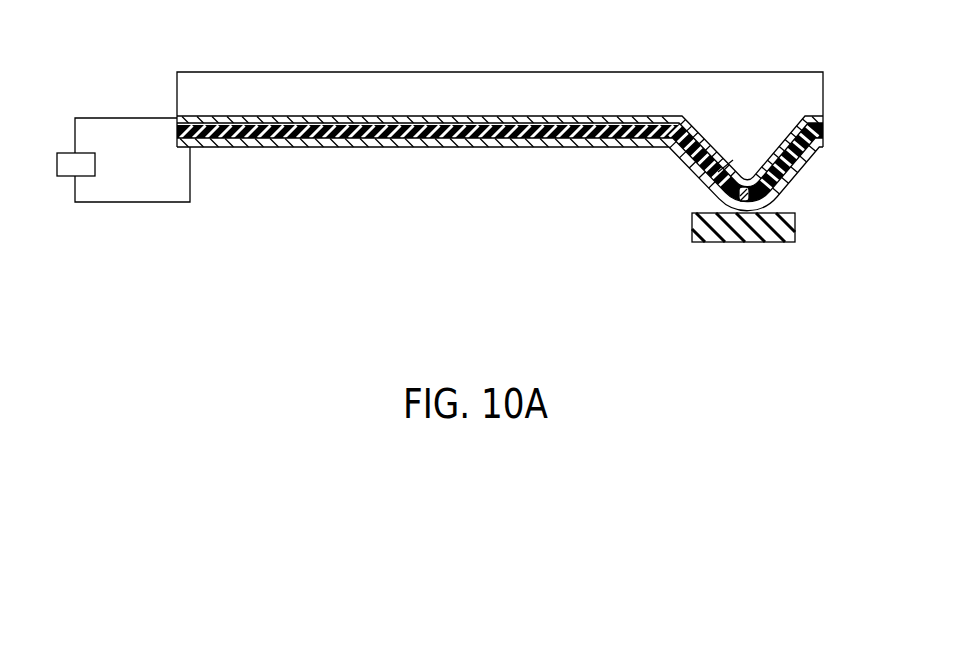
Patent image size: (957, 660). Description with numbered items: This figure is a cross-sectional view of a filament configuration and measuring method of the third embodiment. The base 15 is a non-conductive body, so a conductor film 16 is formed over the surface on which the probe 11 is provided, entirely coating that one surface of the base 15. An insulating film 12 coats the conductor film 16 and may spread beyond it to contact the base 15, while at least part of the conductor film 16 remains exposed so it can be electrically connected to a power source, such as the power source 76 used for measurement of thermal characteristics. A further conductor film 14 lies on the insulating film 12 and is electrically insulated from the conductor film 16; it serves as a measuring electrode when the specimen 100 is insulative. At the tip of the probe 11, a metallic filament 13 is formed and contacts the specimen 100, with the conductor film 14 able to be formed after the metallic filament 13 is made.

The probe 11 is at (691, 165).
The insulating film 12 is at (177, 131).
The metallic filament 13 is at (750, 197).
The conductor film 14 is at (243, 147).
The base 15 is at (177, 81).
The conductor film 16 is at (246, 116).
The power source 76 is at (97, 162).
The specimen 100 is at (795, 229).